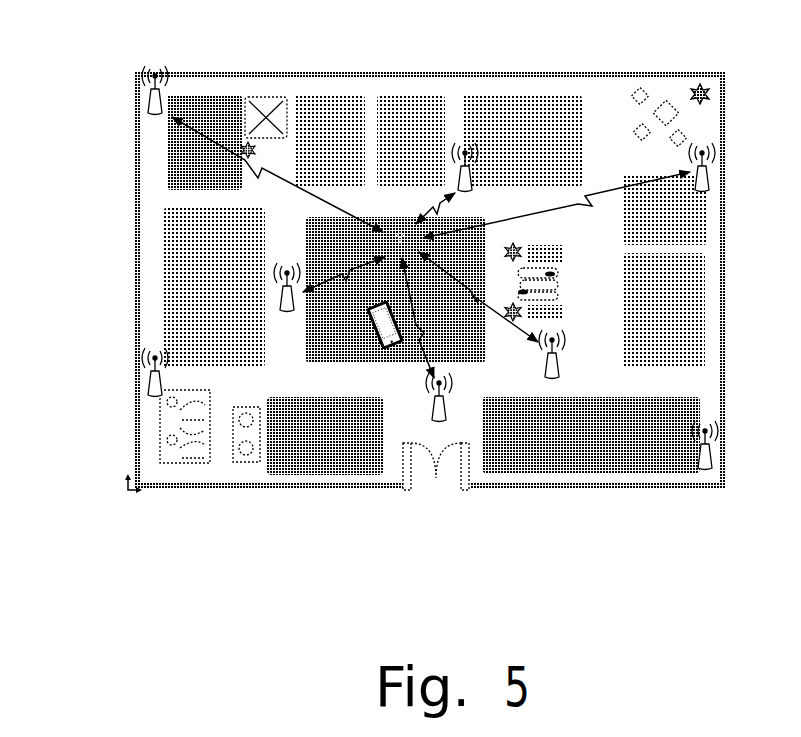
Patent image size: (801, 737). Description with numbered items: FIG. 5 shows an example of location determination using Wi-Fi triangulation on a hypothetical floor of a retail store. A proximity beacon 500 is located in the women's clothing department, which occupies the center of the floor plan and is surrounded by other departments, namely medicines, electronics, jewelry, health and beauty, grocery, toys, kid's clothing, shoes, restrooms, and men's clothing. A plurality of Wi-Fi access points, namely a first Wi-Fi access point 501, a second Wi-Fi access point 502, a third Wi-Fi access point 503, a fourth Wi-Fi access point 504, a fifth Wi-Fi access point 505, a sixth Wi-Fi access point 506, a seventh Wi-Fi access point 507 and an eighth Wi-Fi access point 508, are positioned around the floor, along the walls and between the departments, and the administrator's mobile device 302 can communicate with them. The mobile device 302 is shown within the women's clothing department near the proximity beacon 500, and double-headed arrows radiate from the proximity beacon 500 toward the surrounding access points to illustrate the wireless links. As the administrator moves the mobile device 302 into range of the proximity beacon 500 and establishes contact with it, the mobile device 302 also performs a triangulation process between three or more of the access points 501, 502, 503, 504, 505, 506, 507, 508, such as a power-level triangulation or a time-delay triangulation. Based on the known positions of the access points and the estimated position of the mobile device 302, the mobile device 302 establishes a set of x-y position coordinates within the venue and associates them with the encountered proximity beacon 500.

The mobile device 302 is at (369, 338).
The proximity beacon 500 is at (392, 222).
The Wi-Fi access point 501 is at (170, 80).
The Wi-Fi access point 502 is at (170, 254).
The Wi-Fi access point 503 is at (115, 403).
The Wi-Fi access point 504 is at (430, 410).
The Wi-Fi access point 505 is at (550, 380).
The Wi-Fi access point 506 is at (712, 452).
The Wi-Fi access point 507 is at (717, 158).
The Wi-Fi access point 508 is at (474, 102).